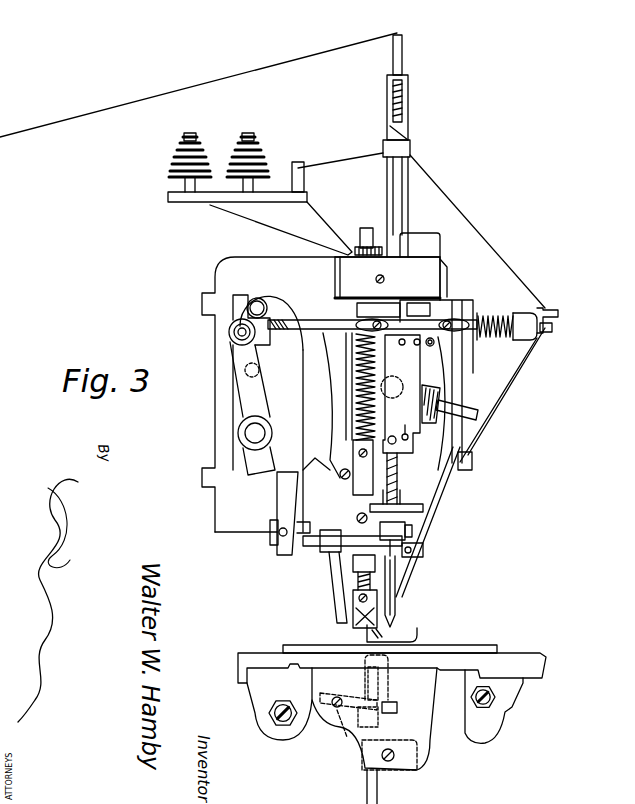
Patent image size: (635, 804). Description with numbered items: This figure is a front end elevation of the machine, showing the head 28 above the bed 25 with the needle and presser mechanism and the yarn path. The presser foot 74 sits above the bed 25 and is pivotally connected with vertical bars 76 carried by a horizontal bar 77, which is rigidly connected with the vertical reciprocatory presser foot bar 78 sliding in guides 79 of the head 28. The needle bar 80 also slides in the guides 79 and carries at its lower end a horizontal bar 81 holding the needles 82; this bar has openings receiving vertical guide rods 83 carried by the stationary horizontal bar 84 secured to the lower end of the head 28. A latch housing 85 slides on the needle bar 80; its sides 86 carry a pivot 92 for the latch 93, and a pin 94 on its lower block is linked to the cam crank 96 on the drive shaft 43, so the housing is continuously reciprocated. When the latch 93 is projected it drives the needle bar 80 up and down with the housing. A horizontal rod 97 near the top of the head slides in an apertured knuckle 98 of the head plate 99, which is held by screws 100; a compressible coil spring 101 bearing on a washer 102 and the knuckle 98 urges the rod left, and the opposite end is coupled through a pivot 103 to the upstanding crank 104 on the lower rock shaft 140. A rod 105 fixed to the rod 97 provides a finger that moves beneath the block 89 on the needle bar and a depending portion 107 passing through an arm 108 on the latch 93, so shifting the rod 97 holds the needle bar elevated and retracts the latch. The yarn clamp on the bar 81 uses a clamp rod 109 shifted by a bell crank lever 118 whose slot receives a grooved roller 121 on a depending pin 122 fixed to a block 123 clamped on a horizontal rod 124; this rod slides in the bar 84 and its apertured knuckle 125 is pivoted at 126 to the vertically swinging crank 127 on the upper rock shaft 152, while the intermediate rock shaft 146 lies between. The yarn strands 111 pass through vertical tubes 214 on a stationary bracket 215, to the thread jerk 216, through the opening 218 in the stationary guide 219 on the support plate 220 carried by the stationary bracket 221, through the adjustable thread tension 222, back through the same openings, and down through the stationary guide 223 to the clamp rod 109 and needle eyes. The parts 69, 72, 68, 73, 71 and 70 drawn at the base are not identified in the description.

The vertical tubes 214 is at (404, 68).
The stationary bracket 215 is at (410, 110).
The thread jerk 216 is at (411, 153).
The strands 111 is at (483, 253).
The adjustable thread tension 222 is at (254, 163).
The opening 218 is at (300, 163).
The stationary guide 219 is at (305, 186).
The support plate 220 is at (225, 197).
The stationary bracket 221 is at (283, 213).
The screws 100 is at (383, 278).
The block 89 is at (390, 306).
The rod 105 is at (406, 322).
The guides 79 is at (436, 282).
The washer 102 is at (456, 314).
The horizontal rod 97 is at (314, 320).
The head plate 99 is at (509, 317).
The compressible coil spring 101 is at (524, 330).
The stationary guide 223 is at (559, 312).
The apertured knuckle 98 is at (553, 328).
The cam crank 96 is at (392, 378).
The pivot 92 is at (436, 346).
The latch housing 85 is at (428, 363).
The sides 86 is at (414, 398).
The pin 94 is at (405, 434).
The latch 93 is at (434, 416).
The drive shaft 43 is at (357, 420).
The arm 108 is at (484, 428).
The depending portion 107 is at (472, 462).
The needle bar 80 is at (398, 476).
The head 28 is at (438, 475).
The presser foot bar 78 is at (386, 499).
The stationary horizontal bar 84 is at (414, 525).
The horizontal rod 124 is at (424, 548).
The clamp rod 109 is at (424, 553).
The horizontal bar 81 is at (418, 572).
The vertical guide rods 83 is at (400, 592).
The needles 82 is at (398, 614).
The grooved roller 121 is at (333, 548).
The block 123 is at (322, 553).
The horizontal bar 77 is at (357, 565).
The depending vertical pin 122 is at (333, 607).
The vertical bars 76 is at (368, 620).
The presser foot 74 is at (406, 645).
The bed 25 is at (523, 660).
The bracket 69 is at (366, 663).
The block 72 is at (388, 700).
The arm 68 is at (328, 708).
The pin 73 is at (347, 728).
The bracket 71 is at (413, 767).
The shaft 70 is at (374, 788).
The upper rock shaft 152 is at (247, 309).
The pivot 103 is at (229, 332).
The upstanding crank 104 is at (243, 404).
The intermediate horizontal rock shaft 146 is at (262, 369).
The lower horizontal rock shaft 140 is at (250, 434).
The vertically swinging crank 127 is at (290, 483).
The apertured knuckle 125 is at (307, 527).
The pivot 126 is at (278, 537).
The bell crank lever 118 is at (358, 517).